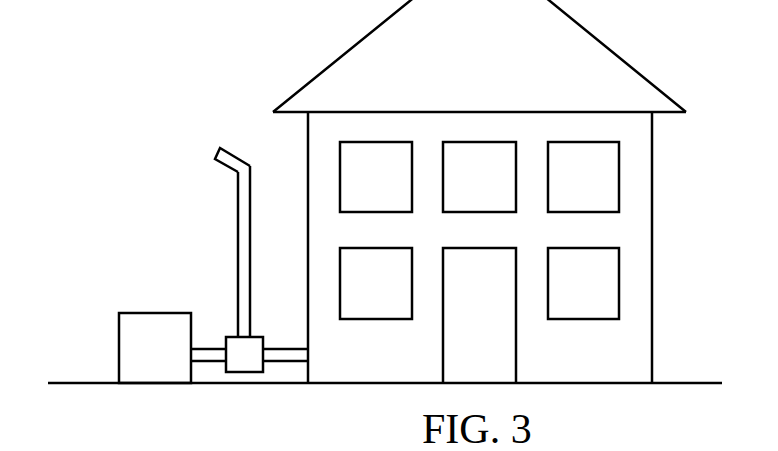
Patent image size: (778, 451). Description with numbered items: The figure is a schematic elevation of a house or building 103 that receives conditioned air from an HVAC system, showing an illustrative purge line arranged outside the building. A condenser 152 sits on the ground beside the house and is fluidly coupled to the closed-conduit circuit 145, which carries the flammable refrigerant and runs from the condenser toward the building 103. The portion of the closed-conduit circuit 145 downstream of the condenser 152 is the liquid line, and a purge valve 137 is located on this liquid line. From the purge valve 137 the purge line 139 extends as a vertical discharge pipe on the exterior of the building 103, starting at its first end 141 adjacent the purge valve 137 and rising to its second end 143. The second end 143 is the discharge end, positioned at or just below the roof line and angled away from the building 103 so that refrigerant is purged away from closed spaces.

The building 103 is at (653, 247).
The condenser 152 is at (119, 347).
The first end 141 is at (238, 337).
The purge line 139 is at (237, 206).
The second end 143 is at (216, 152).
The purge valve 137 is at (238, 372).
The closed-conduit circuit 145 is at (297, 361).